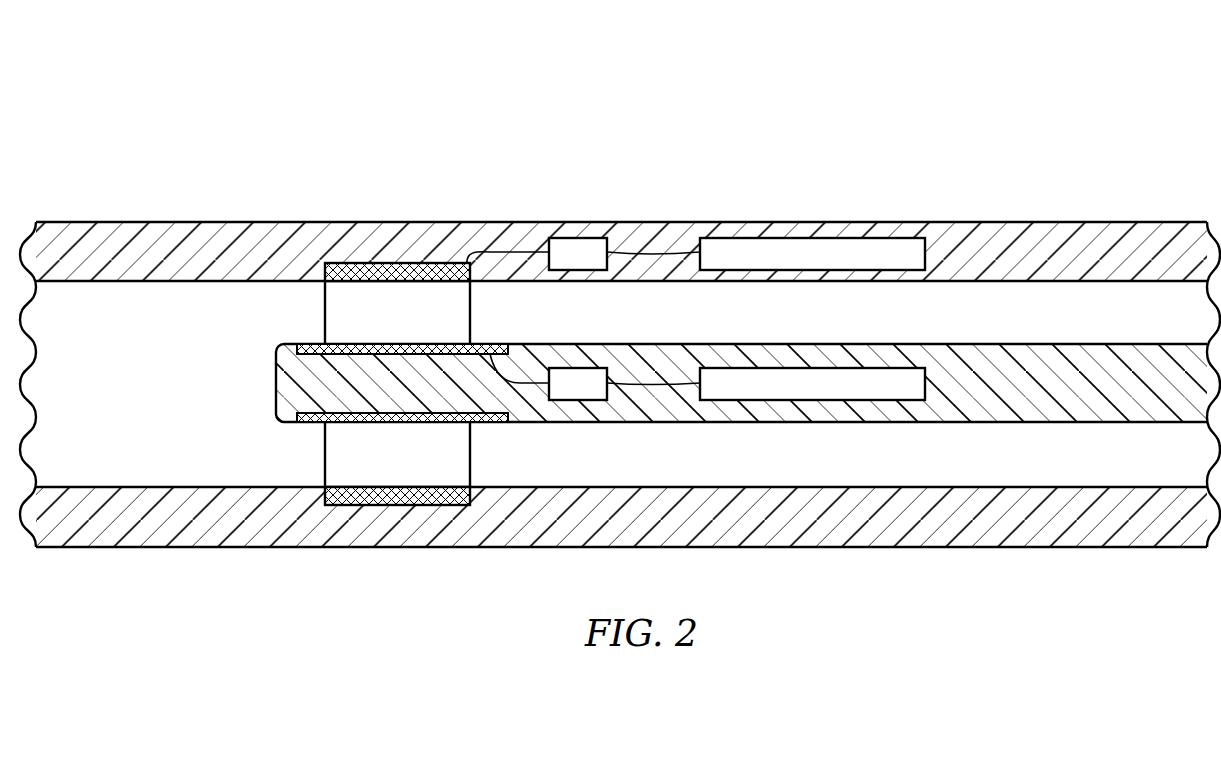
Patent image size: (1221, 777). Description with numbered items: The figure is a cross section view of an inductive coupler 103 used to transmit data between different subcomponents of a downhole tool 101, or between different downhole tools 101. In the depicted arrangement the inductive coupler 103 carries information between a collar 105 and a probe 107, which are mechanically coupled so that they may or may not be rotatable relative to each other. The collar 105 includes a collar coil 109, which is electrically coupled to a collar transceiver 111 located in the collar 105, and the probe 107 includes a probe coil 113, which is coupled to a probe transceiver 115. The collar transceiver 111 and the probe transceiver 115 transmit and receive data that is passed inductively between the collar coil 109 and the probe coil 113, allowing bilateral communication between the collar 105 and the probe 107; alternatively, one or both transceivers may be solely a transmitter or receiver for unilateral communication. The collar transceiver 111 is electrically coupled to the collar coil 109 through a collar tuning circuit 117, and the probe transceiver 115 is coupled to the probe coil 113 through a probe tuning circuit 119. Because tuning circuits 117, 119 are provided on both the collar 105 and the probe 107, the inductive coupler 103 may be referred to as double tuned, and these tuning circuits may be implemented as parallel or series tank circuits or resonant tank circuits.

The downhole tool 101 is at (135, 180).
The inductive coupler 103 is at (661, 274).
The collar 105 is at (757, 238).
The probe 107 is at (960, 343).
The collar coil 109 is at (410, 263).
The collar transceiver 111 is at (850, 250).
The probe coil 113 is at (336, 344).
The probe transceiver 115 is at (808, 400).
The collar tuning circuit 117 is at (563, 238).
The probe tuning circuit 119 is at (588, 368).